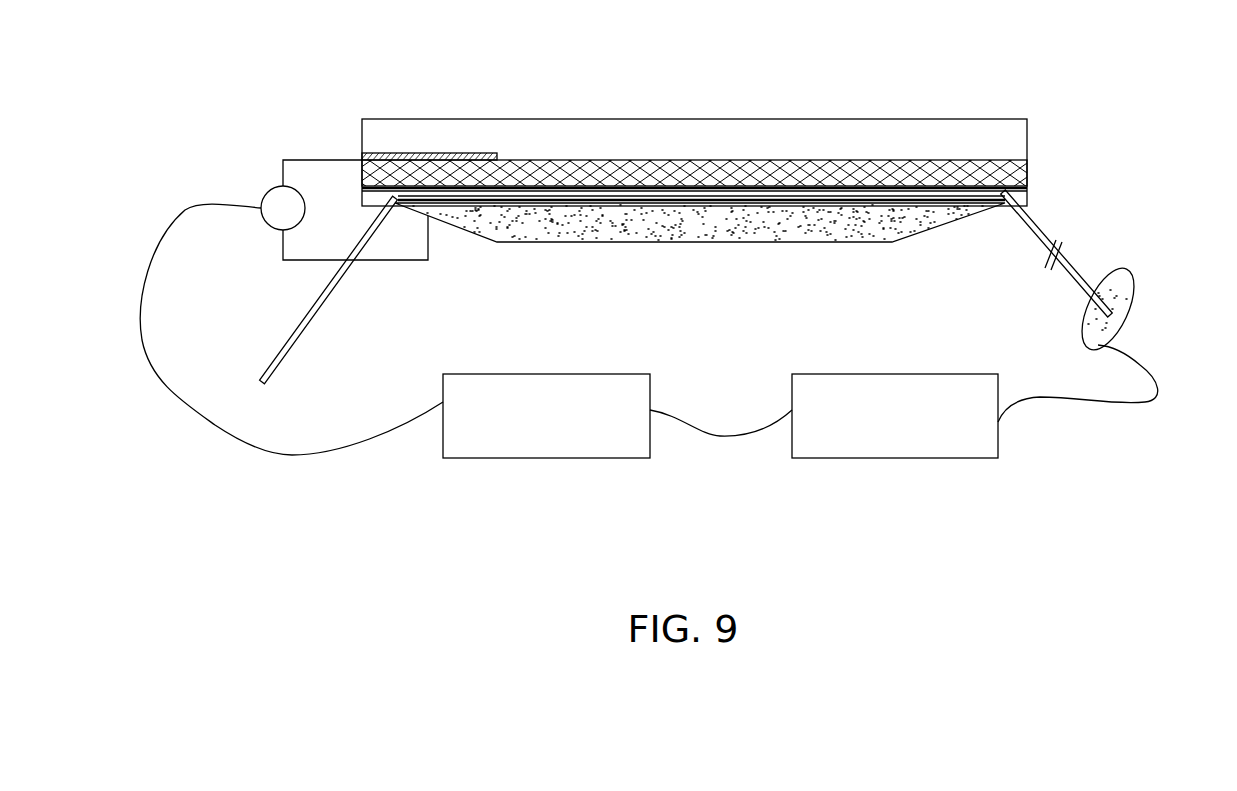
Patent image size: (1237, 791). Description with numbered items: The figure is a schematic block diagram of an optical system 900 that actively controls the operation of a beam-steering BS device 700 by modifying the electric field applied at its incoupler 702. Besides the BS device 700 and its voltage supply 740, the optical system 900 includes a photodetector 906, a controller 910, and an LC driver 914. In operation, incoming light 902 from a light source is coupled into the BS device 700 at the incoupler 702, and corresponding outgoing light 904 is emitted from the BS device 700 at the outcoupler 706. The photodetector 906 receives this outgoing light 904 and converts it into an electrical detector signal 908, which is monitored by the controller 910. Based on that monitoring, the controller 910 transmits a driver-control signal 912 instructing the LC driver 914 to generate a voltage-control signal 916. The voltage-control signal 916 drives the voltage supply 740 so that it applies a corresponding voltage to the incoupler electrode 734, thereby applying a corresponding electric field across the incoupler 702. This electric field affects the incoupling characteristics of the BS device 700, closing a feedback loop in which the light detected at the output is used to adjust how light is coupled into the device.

The BS device 700 is at (810, 106).
The incoupler electrode 734 is at (438, 152).
The voltage supply 740 is at (270, 192).
The incoupler 702 is at (454, 246).
The outcoupler 706 is at (967, 242).
The incoming light 902 is at (322, 300).
The outgoing light 904 is at (1030, 224).
The photodetector 906 is at (1118, 323).
The detector signal 908 is at (1083, 398).
The controller 910 is at (905, 459).
The driver-control signal 912 is at (720, 437).
The LC driver 914 is at (545, 459).
The voltage-control signal 916 is at (292, 458).
The optical system 900 is at (782, 550).